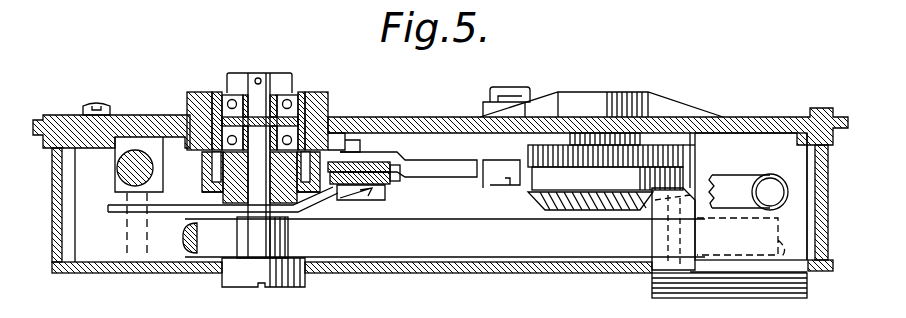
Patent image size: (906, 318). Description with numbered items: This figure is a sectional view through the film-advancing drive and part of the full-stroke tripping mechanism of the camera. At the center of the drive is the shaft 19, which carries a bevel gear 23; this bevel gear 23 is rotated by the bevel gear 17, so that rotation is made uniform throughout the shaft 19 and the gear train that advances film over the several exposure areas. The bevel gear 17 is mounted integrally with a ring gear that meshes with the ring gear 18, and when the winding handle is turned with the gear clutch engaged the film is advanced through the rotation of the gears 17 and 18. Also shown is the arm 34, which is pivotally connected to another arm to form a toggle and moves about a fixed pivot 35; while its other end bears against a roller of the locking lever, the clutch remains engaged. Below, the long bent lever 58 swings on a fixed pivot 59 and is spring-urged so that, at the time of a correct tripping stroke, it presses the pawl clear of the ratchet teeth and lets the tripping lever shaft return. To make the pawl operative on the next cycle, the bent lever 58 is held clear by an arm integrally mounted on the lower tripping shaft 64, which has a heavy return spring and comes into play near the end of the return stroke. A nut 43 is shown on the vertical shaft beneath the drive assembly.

The bevel gear 17 is at (528, 193).
The ring gear 18 is at (670, 147).
The shaft 19 is at (444, 238).
The bevel gear 23 is at (697, 197).
The arm 34 is at (367, 165).
The fixed pivot 35 is at (370, 165).
The nut 43 is at (250, 270).
The bent lever 58 is at (185, 213).
The fixed pivot 59 is at (130, 257).
The lower tripping shaft 64 is at (140, 150).